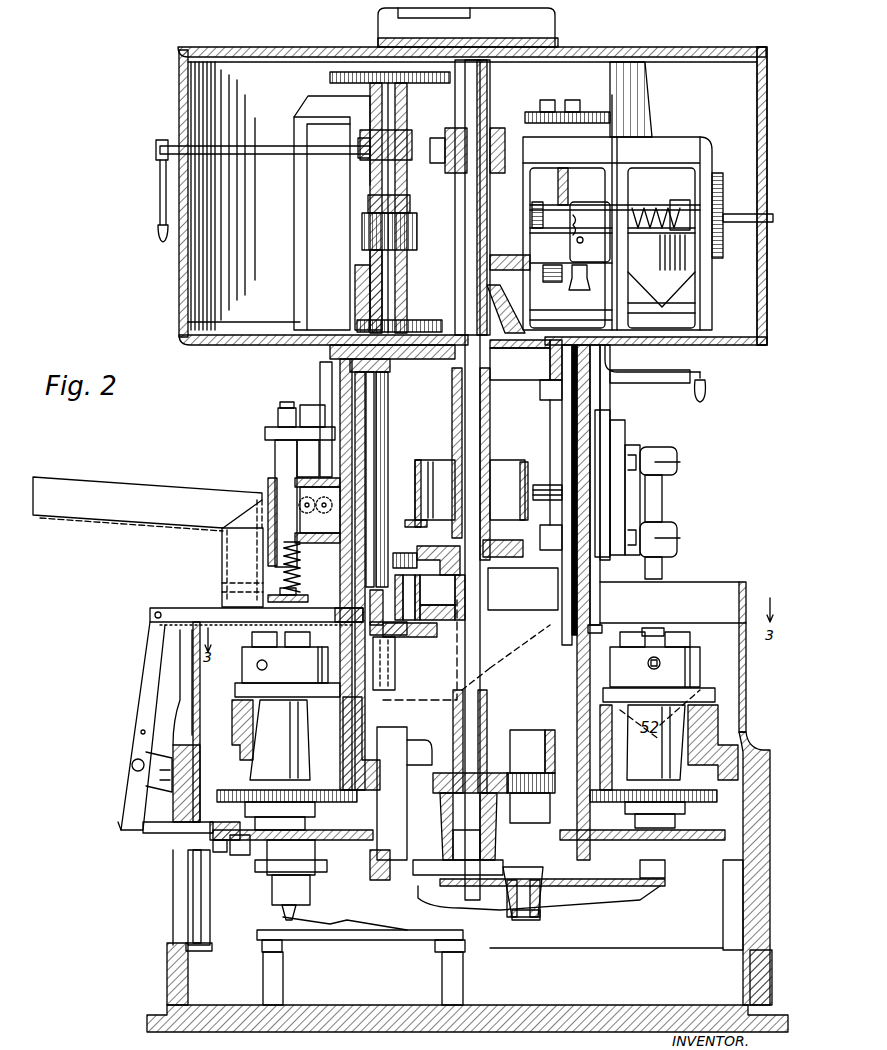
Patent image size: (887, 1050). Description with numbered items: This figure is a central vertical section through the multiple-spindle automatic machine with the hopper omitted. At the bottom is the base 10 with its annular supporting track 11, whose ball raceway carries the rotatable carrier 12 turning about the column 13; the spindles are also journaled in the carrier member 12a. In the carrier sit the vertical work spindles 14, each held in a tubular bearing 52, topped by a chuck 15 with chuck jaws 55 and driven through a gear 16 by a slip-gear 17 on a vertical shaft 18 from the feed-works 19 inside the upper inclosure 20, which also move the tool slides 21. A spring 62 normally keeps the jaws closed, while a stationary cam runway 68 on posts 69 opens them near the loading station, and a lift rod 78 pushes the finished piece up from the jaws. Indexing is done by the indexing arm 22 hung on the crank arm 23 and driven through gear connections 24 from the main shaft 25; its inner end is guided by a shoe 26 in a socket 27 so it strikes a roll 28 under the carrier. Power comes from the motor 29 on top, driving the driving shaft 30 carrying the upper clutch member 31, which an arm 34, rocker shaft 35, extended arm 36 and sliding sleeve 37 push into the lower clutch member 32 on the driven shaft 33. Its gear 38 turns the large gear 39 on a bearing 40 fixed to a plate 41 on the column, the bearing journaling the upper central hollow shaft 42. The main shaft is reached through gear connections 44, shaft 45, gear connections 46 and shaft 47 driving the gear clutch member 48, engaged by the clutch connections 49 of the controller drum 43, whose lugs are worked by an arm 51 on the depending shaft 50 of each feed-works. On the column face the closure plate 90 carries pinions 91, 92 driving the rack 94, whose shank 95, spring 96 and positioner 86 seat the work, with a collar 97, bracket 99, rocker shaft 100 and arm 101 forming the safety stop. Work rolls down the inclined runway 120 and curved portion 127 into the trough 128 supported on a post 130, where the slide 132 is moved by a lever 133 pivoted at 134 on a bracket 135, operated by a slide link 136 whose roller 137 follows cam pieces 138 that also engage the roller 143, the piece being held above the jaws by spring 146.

The base 10 is at (320, 1032).
The annular supporting track 11 is at (345, 862).
The rotatable carrier 12 is at (325, 712).
The carrier member 12a is at (220, 852).
The column 13 is at (600, 402).
The work spindle 14 is at (345, 830).
The work table or chuck 15 is at (680, 635).
The gear 16 is at (325, 790).
The slip-gear 17 is at (622, 745).
The vertical shaft 18 is at (575, 645).
The feed-works 19 is at (685, 150).
The upper inclosure 20 is at (755, 288).
The tool slide 21 is at (675, 455).
The indexing arm 22 is at (558, 900).
The crank arm 23 is at (530, 730).
The gear connections 24 is at (512, 760).
The main shaft 25 is at (482, 668).
The shoe 26 is at (460, 845).
The socket 27 is at (442, 815).
The roll 28 is at (665, 877).
The motor 29 is at (555, 15).
The driving shaft 30 is at (400, 103).
The upper clutch member 31 is at (395, 197).
The lower clutch member 32 is at (417, 229).
The driven shaft 33 is at (370, 255).
The arm 34 is at (158, 200).
The rocker shaft 35 is at (272, 155).
The extended arm 36 is at (366, 158).
The sleeve 37 is at (410, 132).
The gear 38 is at (355, 272).
The gear 39 is at (488, 246).
The bearing 40 is at (492, 300).
The plate 41 is at (515, 352).
The upper central hollow shaft 42 is at (465, 350).
The controller drum 43 is at (508, 462).
The gear connections 44 is at (425, 360).
The shaft 45 is at (390, 421).
The gear connections 46 is at (350, 645).
The shaft 47 is at (410, 583).
The gear clutch member 48 is at (408, 556).
The clutch connections 49 is at (415, 520).
The depending shaft 50 is at (552, 418).
The arm 51 is at (542, 485).
The tubular bearing 52 is at (280, 740).
The chuck jaws 55 is at (650, 628).
The spring 62 is at (272, 892).
The cam runway 68 is at (347, 920).
The post 69 is at (283, 973).
The lift rod 78 is at (292, 918).
The positioner 86 is at (305, 599).
The closure plate 90 is at (335, 362).
The pinion 91 is at (325, 515).
The pinion 92 is at (305, 515).
The rack 94 is at (322, 467).
The shank 95 is at (300, 558).
The spring 96 is at (300, 578).
The collar 97 is at (278, 412).
The bracket 99 is at (265, 436).
The rocker shaft 100 is at (310, 458).
The arm 101 is at (308, 405).
The inclined runway 120 is at (110, 488).
The depending curved portion 127 is at (222, 562).
The trough 128 is at (223, 640).
The post 130 is at (182, 672).
The slide 132 is at (187, 608).
The lever 133 is at (150, 683).
The pivot 134 is at (132, 764).
The bracket 135 is at (148, 780).
The slide link 136 is at (155, 834).
The roller 137 is at (236, 760).
The cam piece 138 is at (238, 830).
The roller 143 is at (210, 860).
The spring 146 is at (341, 615).